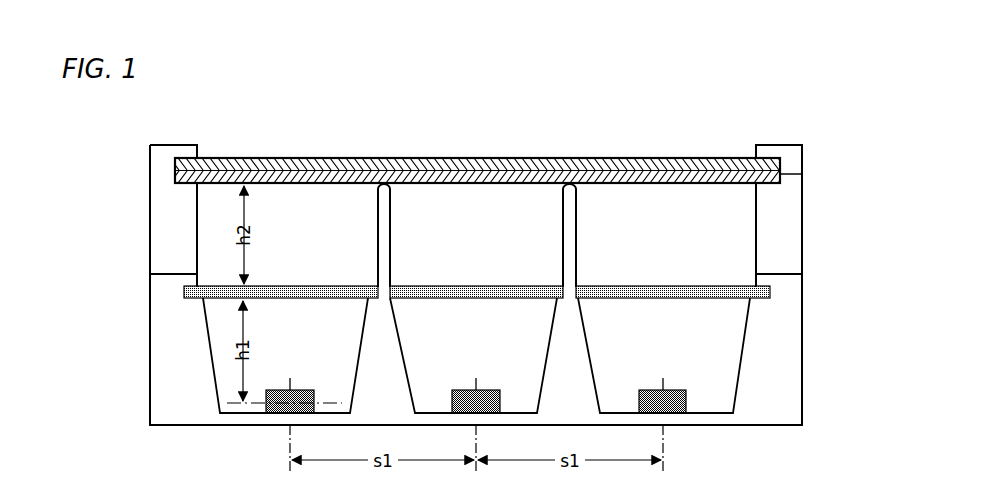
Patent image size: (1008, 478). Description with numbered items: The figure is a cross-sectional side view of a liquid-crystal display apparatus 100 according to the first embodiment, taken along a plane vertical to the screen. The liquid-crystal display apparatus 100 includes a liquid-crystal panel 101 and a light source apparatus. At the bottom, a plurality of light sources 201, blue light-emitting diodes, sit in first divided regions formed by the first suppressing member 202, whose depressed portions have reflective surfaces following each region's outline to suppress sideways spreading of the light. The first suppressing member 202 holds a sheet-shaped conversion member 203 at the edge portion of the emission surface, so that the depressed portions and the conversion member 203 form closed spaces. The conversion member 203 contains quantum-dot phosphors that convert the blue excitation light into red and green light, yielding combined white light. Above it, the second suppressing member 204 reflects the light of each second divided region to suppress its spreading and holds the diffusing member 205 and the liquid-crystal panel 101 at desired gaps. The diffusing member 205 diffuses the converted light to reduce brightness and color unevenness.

The liquid-crystal display apparatus 100 is at (476, 301).
The liquid-crystal panel 101 is at (300, 157).
The light source 201 is at (463, 390).
The first suppressing member 202 is at (586, 368).
The conversion member 203 is at (660, 287).
The second suppressing member 204 is at (160, 217).
The diffusing member 205 is at (805, 176).